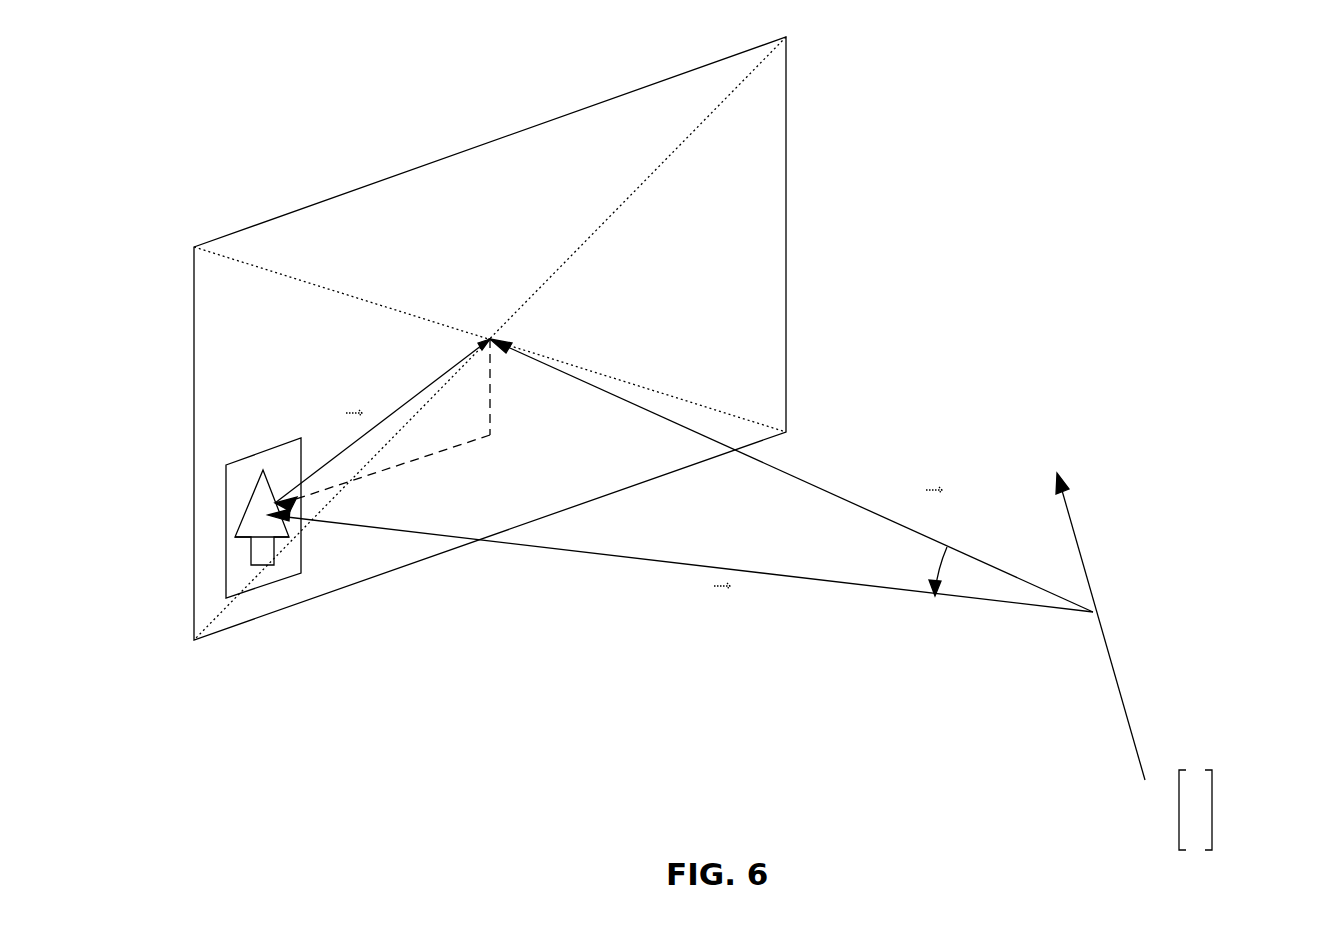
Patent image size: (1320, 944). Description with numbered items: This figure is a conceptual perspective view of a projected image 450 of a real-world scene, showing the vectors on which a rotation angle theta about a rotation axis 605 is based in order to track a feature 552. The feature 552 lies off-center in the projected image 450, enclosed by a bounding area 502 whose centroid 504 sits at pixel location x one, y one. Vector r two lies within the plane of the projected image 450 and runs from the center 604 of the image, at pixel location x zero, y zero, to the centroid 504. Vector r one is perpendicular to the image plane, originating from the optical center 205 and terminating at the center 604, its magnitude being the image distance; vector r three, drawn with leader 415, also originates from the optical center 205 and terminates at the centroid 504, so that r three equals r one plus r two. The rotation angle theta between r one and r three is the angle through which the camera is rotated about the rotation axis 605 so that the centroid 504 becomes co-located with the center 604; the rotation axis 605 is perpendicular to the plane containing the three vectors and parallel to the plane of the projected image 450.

The projected image 450 is at (736, 58).
The center of projected image 604 is at (490, 339).
The ray r1 from viewer to screen center 415 is at (807, 481).
The optical center 205 is at (1093, 612).
The rotation axis 605 is at (1072, 518).
The bounding area 502 is at (273, 447).
The feature 552 is at (262, 493).
The centroid 504 is at (262, 510).